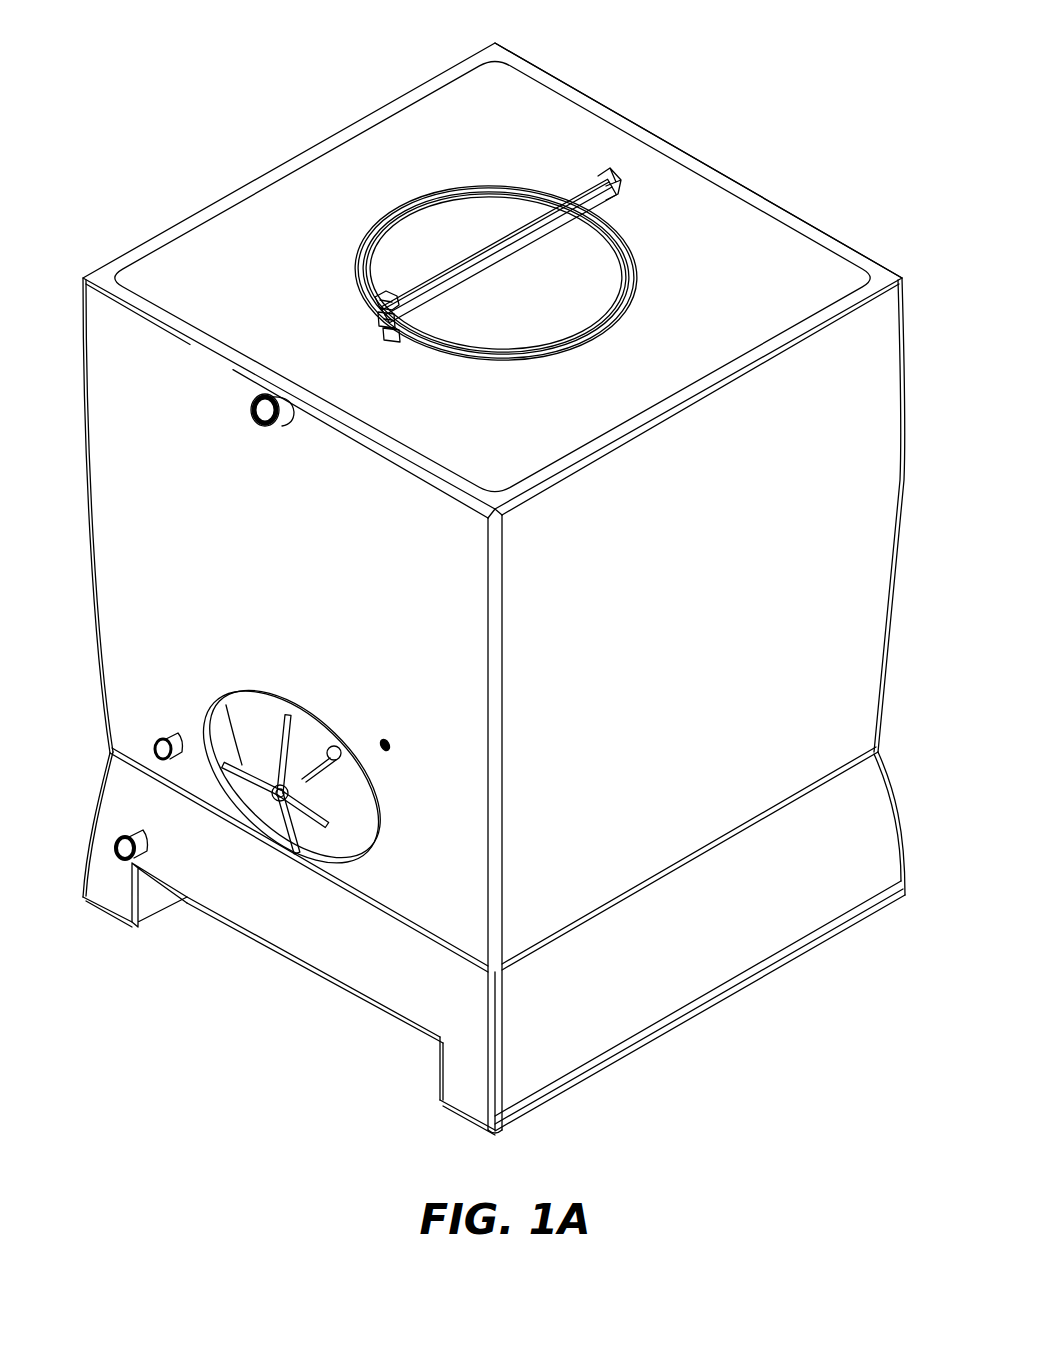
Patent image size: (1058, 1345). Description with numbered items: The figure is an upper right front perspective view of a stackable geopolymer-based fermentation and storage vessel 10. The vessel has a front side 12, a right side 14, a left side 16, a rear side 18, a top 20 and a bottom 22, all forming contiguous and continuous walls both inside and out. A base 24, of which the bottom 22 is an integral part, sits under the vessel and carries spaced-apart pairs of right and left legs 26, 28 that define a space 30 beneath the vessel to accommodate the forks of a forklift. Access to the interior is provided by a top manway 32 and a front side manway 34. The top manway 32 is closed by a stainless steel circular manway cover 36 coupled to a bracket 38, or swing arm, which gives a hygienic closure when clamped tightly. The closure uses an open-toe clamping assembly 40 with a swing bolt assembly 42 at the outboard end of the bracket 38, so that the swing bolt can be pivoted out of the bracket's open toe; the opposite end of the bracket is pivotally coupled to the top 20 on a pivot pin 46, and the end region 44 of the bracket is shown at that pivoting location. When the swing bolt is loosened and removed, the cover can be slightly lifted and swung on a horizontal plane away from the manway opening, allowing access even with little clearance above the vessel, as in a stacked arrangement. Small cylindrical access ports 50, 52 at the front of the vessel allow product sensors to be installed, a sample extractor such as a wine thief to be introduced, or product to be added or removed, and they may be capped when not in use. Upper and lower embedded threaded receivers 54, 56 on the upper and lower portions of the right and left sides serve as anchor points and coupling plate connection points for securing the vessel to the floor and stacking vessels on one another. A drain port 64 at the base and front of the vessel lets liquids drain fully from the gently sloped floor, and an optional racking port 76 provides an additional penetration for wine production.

The container assembly 10 is at (247, 64).
The front side 12 is at (108, 578).
The right side 14 is at (903, 450).
The left side 16 is at (101, 238).
The rear side 18 is at (812, 199).
The top 20 is at (485, 105).
The bottom 22 is at (322, 995).
The base 24 is at (112, 792).
The right legs 26 is at (117, 892).
The left legs 28 is at (449, 1068).
The space 30 is at (390, 1040).
The top manway 32 is at (656, 281).
The front side manway 34 is at (263, 806).
The manway cover 36 is at (478, 213).
The bracket 38 is at (562, 193).
The open-toe clamping assembly 40 is at (394, 336).
The swing bolt assembly 42 is at (378, 290).
The handle 44 is at (620, 192).
The pivot pin 46 is at (603, 172).
The access port 50 is at (205, 372).
The access port 52 is at (262, 426).
The upper embedded threaded receiver 54 is at (820, 913).
The lower embedded threaded receiver 56 is at (813, 372).
The drain port 64 is at (115, 849).
The racking port 76 is at (155, 745).